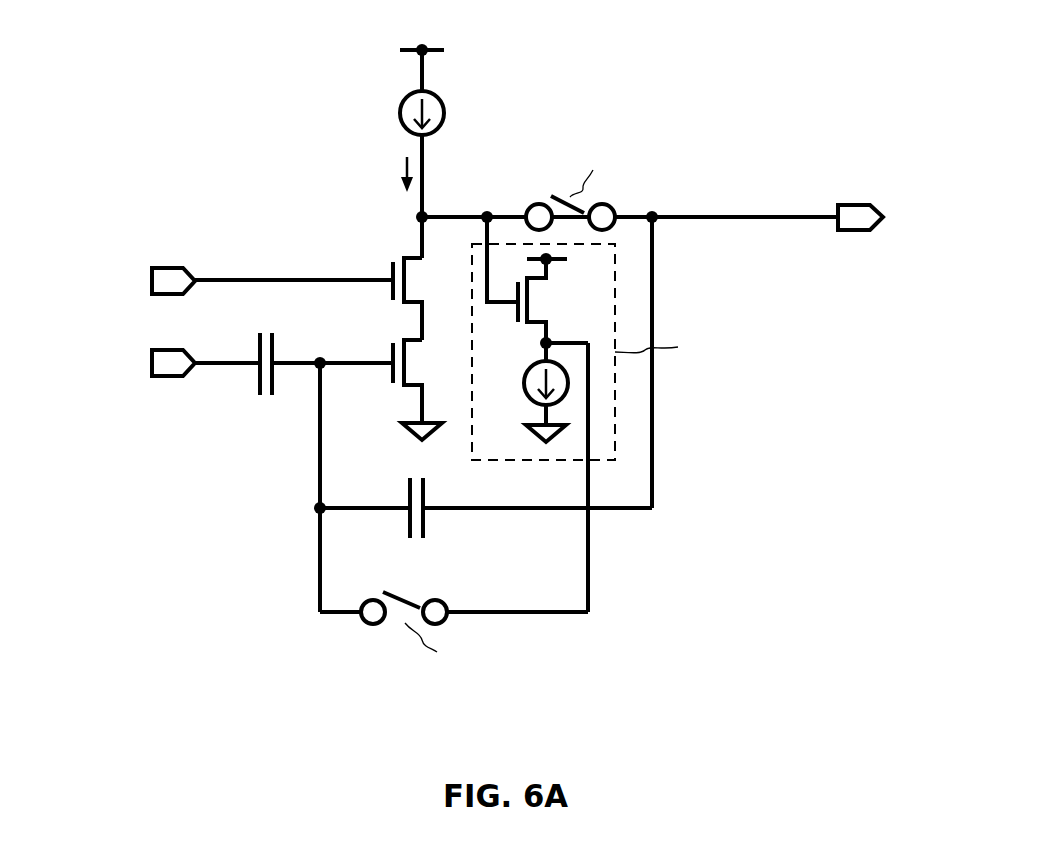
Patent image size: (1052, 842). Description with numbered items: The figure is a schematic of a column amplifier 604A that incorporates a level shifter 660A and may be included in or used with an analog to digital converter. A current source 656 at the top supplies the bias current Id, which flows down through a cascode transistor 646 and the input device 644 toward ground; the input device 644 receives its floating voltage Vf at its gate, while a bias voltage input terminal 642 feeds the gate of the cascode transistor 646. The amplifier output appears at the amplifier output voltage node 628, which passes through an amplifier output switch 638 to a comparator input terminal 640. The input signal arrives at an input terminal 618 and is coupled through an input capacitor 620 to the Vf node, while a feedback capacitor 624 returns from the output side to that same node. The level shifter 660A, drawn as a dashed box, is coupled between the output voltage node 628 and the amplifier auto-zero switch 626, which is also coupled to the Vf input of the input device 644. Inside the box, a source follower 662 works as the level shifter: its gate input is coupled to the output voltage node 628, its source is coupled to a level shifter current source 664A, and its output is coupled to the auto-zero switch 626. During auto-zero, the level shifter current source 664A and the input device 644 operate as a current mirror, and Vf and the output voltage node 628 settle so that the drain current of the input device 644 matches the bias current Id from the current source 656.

The column amplifier 604A is at (165, 32).
The current source 656 is at (452, 118).
The Vamp voltage node 628 is at (490, 180).
The switch SW-AMPO 638 is at (580, 212).
The comparator input terminal Vincmp 640 is at (907, 203).
The bias voltage input terminal VBC 642 is at (103, 267).
The input terminal Vin 618 is at (100, 366).
The input capacitor Cinamp 620 is at (267, 330).
The cascode transistor 646 is at (414, 285).
The input device 644 is at (414, 367).
The level shifter 660A is at (598, 462).
The source follower 662 is at (540, 310).
The level shifter current source 664A is at (523, 383).
The feedback capacitor Cfb 624 is at (430, 504).
The amplifier auto-zero switch 626 is at (418, 606).